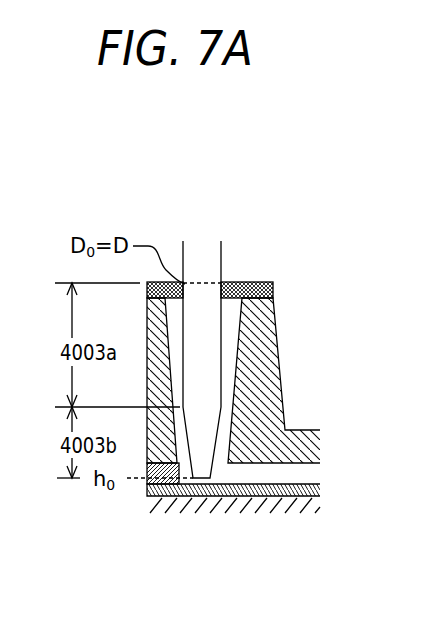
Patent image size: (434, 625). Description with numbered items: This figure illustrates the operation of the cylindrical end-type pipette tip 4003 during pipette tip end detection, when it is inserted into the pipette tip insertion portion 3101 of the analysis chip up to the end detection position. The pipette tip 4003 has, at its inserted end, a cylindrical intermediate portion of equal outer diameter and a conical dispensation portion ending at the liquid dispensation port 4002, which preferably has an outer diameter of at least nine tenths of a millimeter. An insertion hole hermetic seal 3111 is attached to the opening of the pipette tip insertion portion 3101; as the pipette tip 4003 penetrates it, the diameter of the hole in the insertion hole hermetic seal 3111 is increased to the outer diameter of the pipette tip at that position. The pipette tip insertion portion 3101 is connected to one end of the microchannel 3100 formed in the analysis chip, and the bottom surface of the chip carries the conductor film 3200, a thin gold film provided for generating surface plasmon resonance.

The cylindrical end-type pipette tip 4003 is at (221, 261).
The insertion hole hermetic seal 3111 is at (273, 290).
The pipette tip insertion portion 3101 is at (225, 398).
The liquid dispensation port 4002 is at (172, 494).
The microchannel 3100 is at (310, 475).
The conductor film 3200 is at (320, 490).